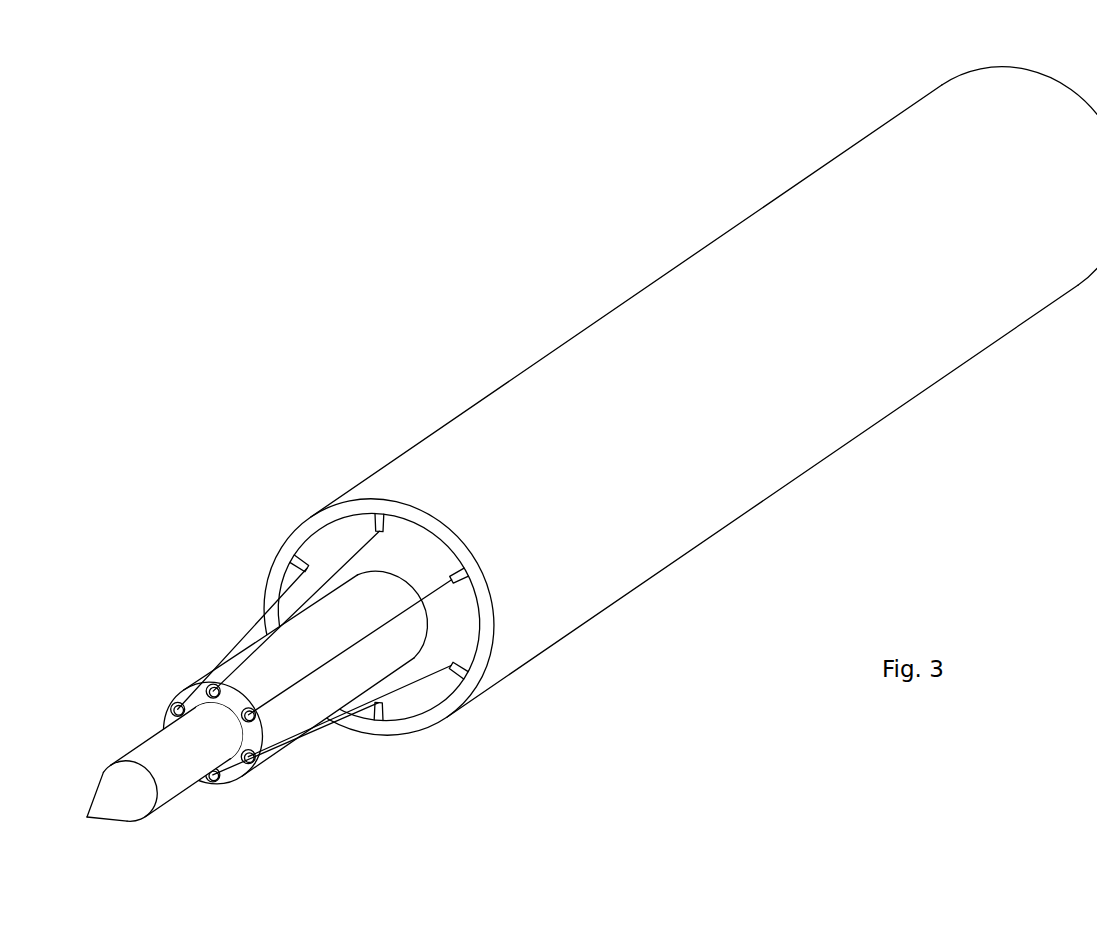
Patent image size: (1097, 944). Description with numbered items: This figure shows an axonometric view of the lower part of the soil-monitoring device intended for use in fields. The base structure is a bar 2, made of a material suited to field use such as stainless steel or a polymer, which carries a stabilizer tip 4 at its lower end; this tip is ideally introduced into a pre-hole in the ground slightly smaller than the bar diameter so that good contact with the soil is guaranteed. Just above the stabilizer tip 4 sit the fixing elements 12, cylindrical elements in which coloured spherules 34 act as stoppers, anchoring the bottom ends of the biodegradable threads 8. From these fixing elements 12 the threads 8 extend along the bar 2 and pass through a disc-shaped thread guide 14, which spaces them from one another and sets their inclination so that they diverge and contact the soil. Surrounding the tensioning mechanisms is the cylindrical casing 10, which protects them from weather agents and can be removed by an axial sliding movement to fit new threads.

The bar 2 is at (283, 655).
The stabilizer tip 4 is at (122, 788).
The biodegradable threads 8 is at (430, 592).
The cylindrical casing 10 is at (697, 283).
The fixing elements 12 is at (163, 688).
The disc-shaped thread guide 14 is at (333, 545).
The coloured spherules 34 is at (250, 762).